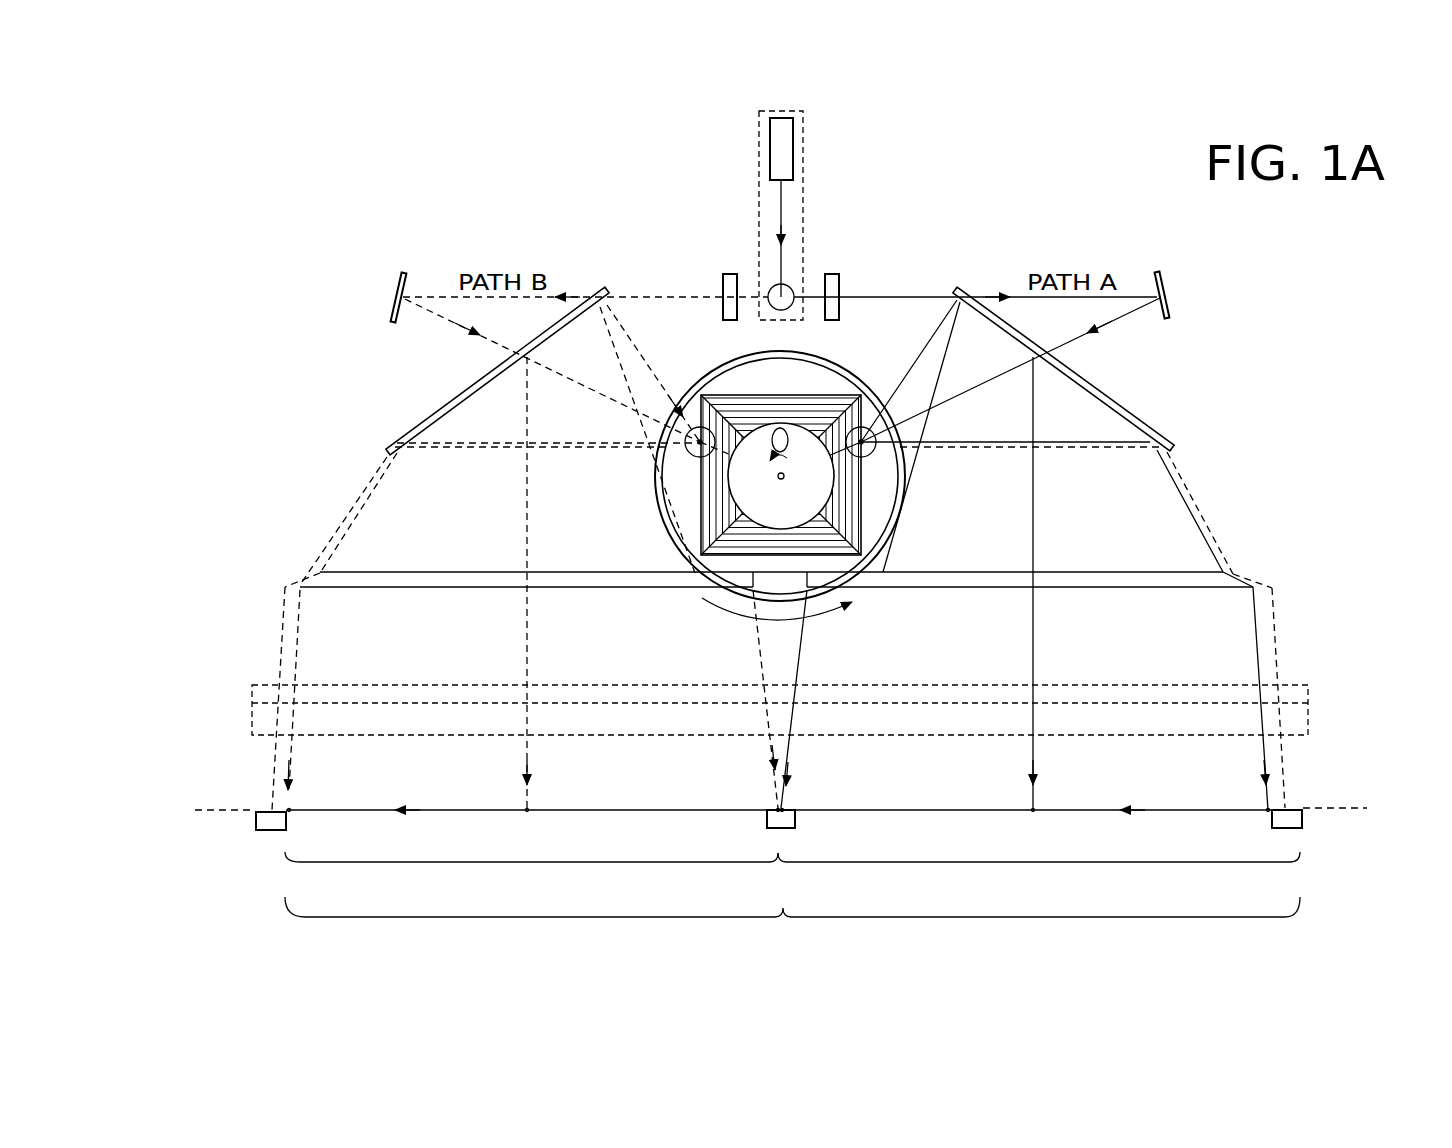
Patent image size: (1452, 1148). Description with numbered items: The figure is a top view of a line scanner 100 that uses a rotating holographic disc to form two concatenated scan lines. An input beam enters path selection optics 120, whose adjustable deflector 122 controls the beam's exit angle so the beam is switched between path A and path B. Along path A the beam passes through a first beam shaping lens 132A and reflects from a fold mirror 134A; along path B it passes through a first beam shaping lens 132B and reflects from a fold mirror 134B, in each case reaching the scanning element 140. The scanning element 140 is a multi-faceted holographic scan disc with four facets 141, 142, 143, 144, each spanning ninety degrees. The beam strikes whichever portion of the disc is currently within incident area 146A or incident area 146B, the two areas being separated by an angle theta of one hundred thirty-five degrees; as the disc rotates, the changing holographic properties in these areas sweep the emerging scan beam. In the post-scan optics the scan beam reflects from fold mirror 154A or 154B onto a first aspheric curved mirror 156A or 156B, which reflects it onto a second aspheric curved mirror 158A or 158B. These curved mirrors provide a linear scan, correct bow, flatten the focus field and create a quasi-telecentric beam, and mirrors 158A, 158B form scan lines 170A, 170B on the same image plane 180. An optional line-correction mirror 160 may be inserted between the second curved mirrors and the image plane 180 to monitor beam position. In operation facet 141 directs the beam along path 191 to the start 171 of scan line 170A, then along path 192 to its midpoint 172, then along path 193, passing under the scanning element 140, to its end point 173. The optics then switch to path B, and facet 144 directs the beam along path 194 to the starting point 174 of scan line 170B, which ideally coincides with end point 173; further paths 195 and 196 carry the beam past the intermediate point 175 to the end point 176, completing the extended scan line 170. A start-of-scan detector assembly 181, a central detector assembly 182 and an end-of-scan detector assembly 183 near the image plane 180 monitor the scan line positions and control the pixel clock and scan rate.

The line scanner 100 is at (268, 162).
The path selection optics 120 is at (758, 210).
The adjustable deflector 122 is at (794, 150).
The first beam shaping lens 132A is at (840, 285).
The first beam shaping lens 132B is at (722, 287).
The fold mirror 134A is at (1157, 272).
The fold mirror 134B is at (405, 268).
The scanning element 140 is at (781, 461).
The facet 141 is at (863, 408).
The facet 142 is at (837, 555).
The facet 143 is at (692, 525).
The facet 144 is at (758, 372).
The incident area 146A is at (870, 458).
The incident area 146B is at (693, 458).
The fold mirror 154A is at (1133, 417).
The fold mirror 154B is at (473, 387).
The first aspheric curved mirror 156A is at (1078, 570).
The first aspheric curved mirror 156B is at (470, 570).
The second aspheric curved mirror 158A is at (1083, 590).
The second aspheric curved mirror 158B is at (473, 590).
The line-correction mirror 160 is at (1308, 690).
The extended scan line 170 is at (792, 929).
The scan line 170A is at (1039, 877).
The scan line 170B is at (531, 877).
The start of scan line 170A 171 is at (1268, 807).
The midpoint of scan line 170A 172 is at (1033, 807).
The end point of scan line 170A 173 is at (782, 807).
The starting point of scan line 170B 174 is at (778, 807).
The scan point 175 is at (527, 807).
The end point of scan line 170B 176 is at (290, 807).
The image plane 180 is at (1327, 808).
The start-of-scan position detector assembly 181 is at (1293, 828).
The central position detector assembly 182 is at (795, 822).
The end-of-scan position detector assembly 183 is at (260, 830).
The path 191 is at (1113, 440).
The path 192 is at (1032, 383).
The path 193 is at (793, 752).
The path 194 is at (618, 331).
The beam path 195 is at (523, 540).
The beam path 196 is at (473, 450).